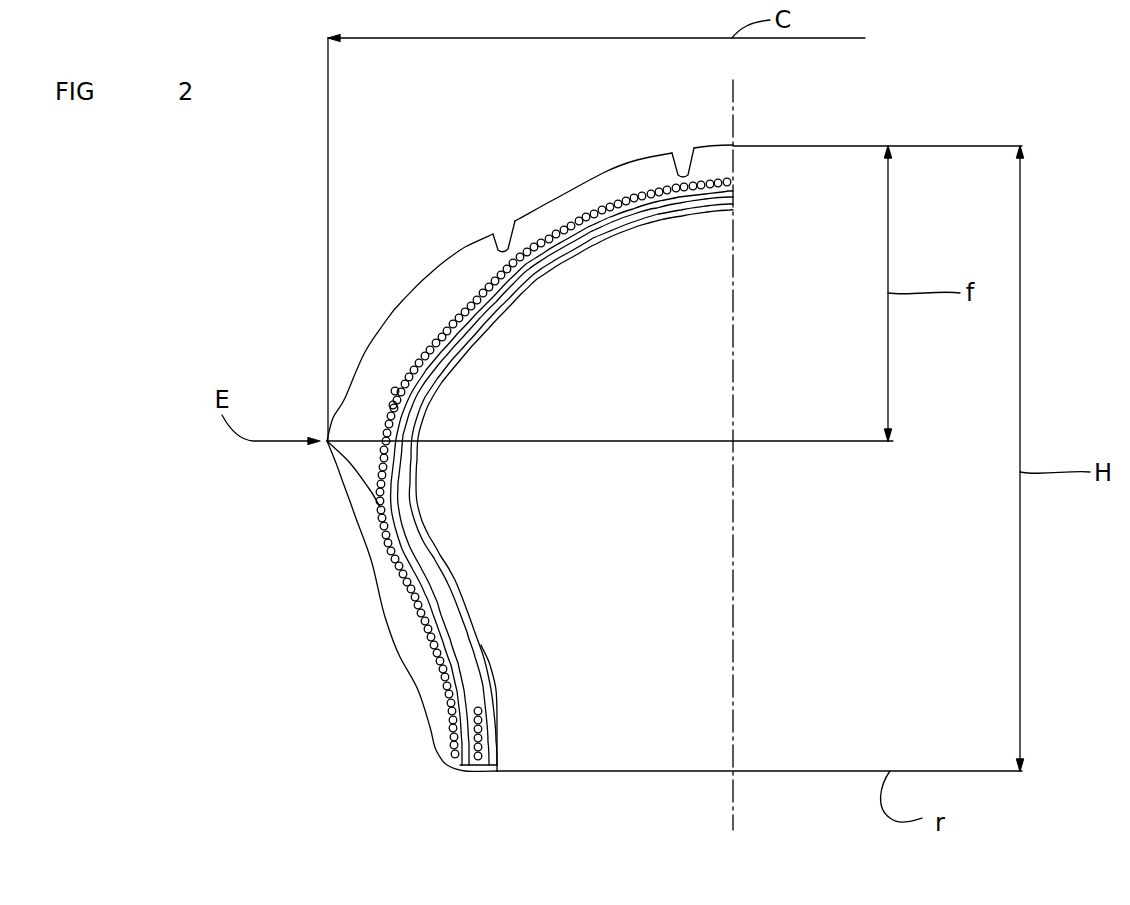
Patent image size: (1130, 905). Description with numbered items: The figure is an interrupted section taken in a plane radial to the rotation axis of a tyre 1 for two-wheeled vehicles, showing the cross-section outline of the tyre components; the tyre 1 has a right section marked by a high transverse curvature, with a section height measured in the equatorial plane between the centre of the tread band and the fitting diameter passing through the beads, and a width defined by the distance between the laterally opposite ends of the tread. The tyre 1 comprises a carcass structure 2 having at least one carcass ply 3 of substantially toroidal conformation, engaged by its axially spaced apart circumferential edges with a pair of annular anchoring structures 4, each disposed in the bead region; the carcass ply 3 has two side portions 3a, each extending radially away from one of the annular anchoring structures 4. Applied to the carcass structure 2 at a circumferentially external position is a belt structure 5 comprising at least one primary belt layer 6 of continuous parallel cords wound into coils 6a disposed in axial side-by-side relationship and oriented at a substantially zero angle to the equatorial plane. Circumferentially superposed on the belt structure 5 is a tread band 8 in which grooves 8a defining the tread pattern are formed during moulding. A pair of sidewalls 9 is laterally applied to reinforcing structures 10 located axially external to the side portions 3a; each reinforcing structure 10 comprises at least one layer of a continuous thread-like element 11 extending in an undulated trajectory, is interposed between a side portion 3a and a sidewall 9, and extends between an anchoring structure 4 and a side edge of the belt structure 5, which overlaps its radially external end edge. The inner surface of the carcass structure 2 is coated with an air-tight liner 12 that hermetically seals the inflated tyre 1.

The tyre 1 is at (302, 333).
The carcass structure 2 is at (644, 244).
The carcass ply 3 is at (568, 252).
The side portions 3a is at (433, 603).
The annular anchoring structures 4 is at (450, 732).
The belt structure 5 is at (540, 216).
The primary belt layer 6 is at (576, 208).
The coils 6a is at (463, 311).
The tread band 8 is at (640, 163).
The grooves 8a is at (506, 240).
The sidewalls 9 is at (390, 603).
The reinforcing structures 10 is at (377, 562).
The continuous thread-like element 11 is at (383, 515).
The liner 12 is at (518, 310).